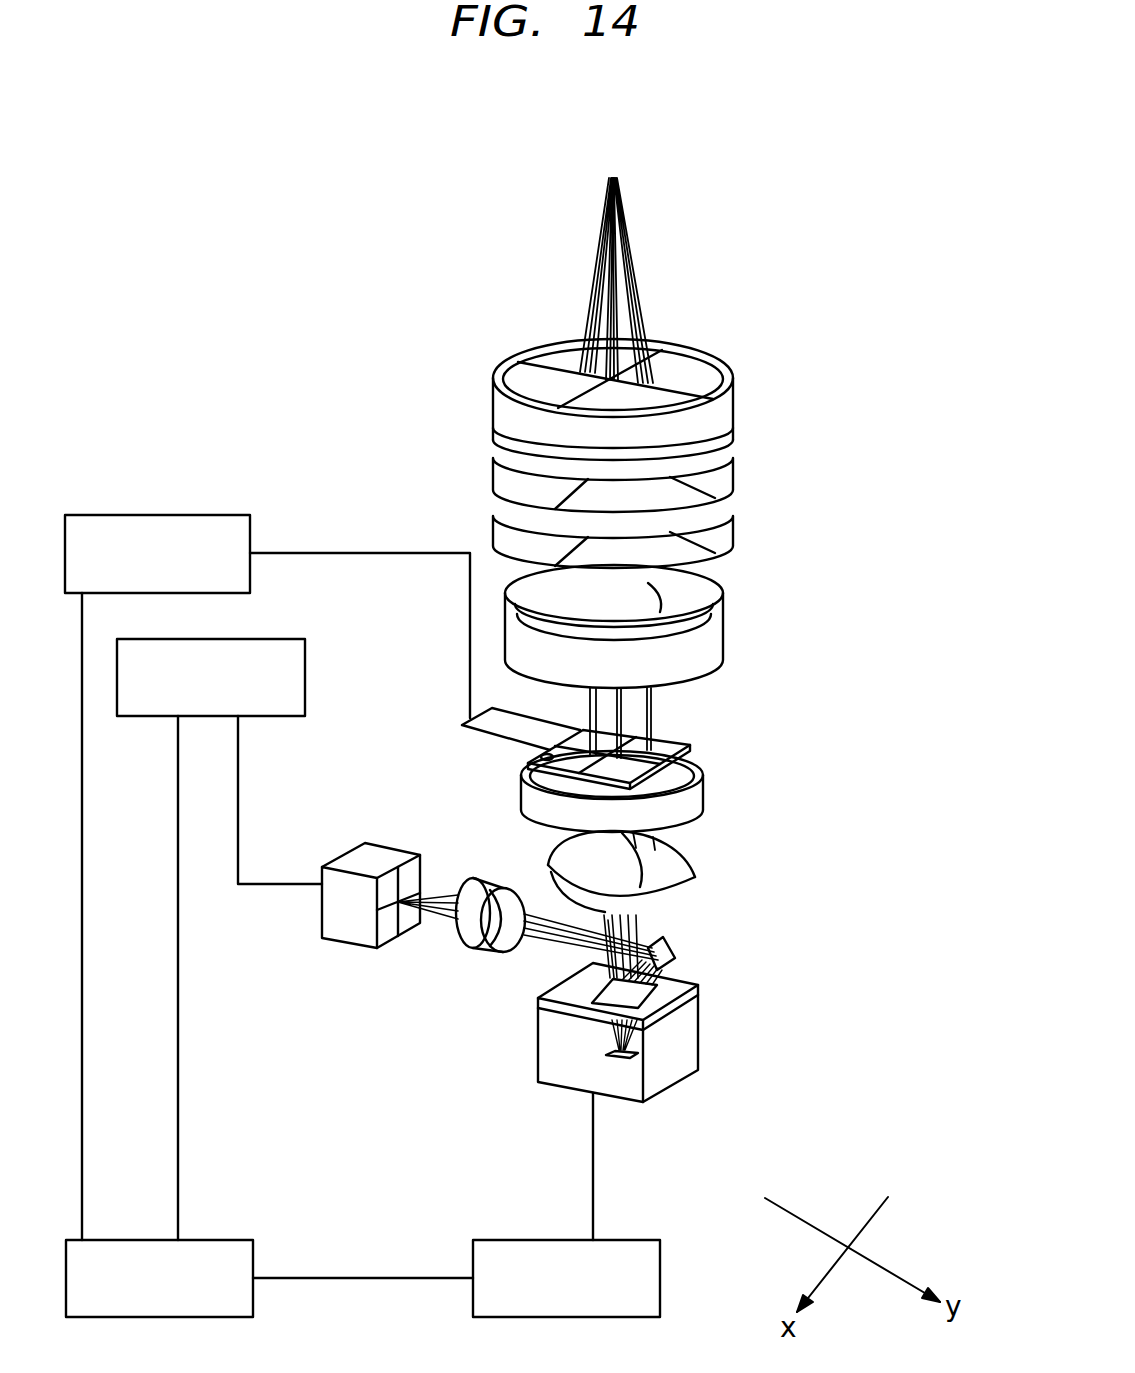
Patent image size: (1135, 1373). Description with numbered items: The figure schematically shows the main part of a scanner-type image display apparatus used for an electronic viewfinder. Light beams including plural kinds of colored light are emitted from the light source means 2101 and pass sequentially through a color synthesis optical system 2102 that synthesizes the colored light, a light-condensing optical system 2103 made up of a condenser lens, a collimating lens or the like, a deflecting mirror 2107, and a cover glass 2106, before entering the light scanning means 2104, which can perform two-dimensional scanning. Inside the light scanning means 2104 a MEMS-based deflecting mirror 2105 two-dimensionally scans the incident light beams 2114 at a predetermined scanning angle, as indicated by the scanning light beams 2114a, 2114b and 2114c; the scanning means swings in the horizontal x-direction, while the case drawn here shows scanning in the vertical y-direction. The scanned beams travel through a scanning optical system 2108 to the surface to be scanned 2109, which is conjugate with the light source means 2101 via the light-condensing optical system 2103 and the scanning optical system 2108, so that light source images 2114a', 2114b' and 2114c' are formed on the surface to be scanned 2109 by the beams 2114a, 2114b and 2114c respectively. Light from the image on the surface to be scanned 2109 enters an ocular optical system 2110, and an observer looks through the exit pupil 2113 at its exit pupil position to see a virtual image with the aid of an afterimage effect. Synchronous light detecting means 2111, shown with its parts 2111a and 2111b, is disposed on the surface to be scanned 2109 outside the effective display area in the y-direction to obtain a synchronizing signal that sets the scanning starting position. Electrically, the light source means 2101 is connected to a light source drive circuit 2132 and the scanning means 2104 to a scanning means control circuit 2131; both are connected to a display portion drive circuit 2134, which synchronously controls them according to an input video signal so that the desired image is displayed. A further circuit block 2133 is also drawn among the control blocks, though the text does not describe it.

The light source means 2101 is at (322, 868).
The color synthesis optical system 2102 is at (377, 922).
The light-condensing optical system 2103 is at (455, 937).
The light scanning means 2104 is at (566, 1055).
The deflecting mirror 2105 is at (640, 1055).
The cover glass 2106 is at (700, 986).
The deflecting mirror 2107 is at (676, 948).
The scanning optical system 2108 is at (697, 876).
The surface to be scanned 2109 is at (703, 778).
The ocular optical system 2110 is at (740, 483).
The synchronous light detecting means 2111 is at (548, 757).
The synchronous light detecting means 2111a is at (468, 724).
The synchronous light detecting means 2111b is at (583, 737).
The exit pupil 2113 is at (613, 178).
The light beams 2114 is at (547, 936).
The light beam 2114a is at (504, 893).
The light beam 2114b is at (501, 872).
The light beam 2114c is at (495, 852).
The light source image 2114a' is at (752, 667).
The light source image 2114b' is at (770, 691).
The light source image 2114c' is at (790, 711).
The scanning means control circuit 2131 is at (566, 1205).
The light source drive circuit 2132 is at (219, 939).
The plate driver 2133 is at (267, 877).
The display portion drive circuit 2134 is at (269, 1278).